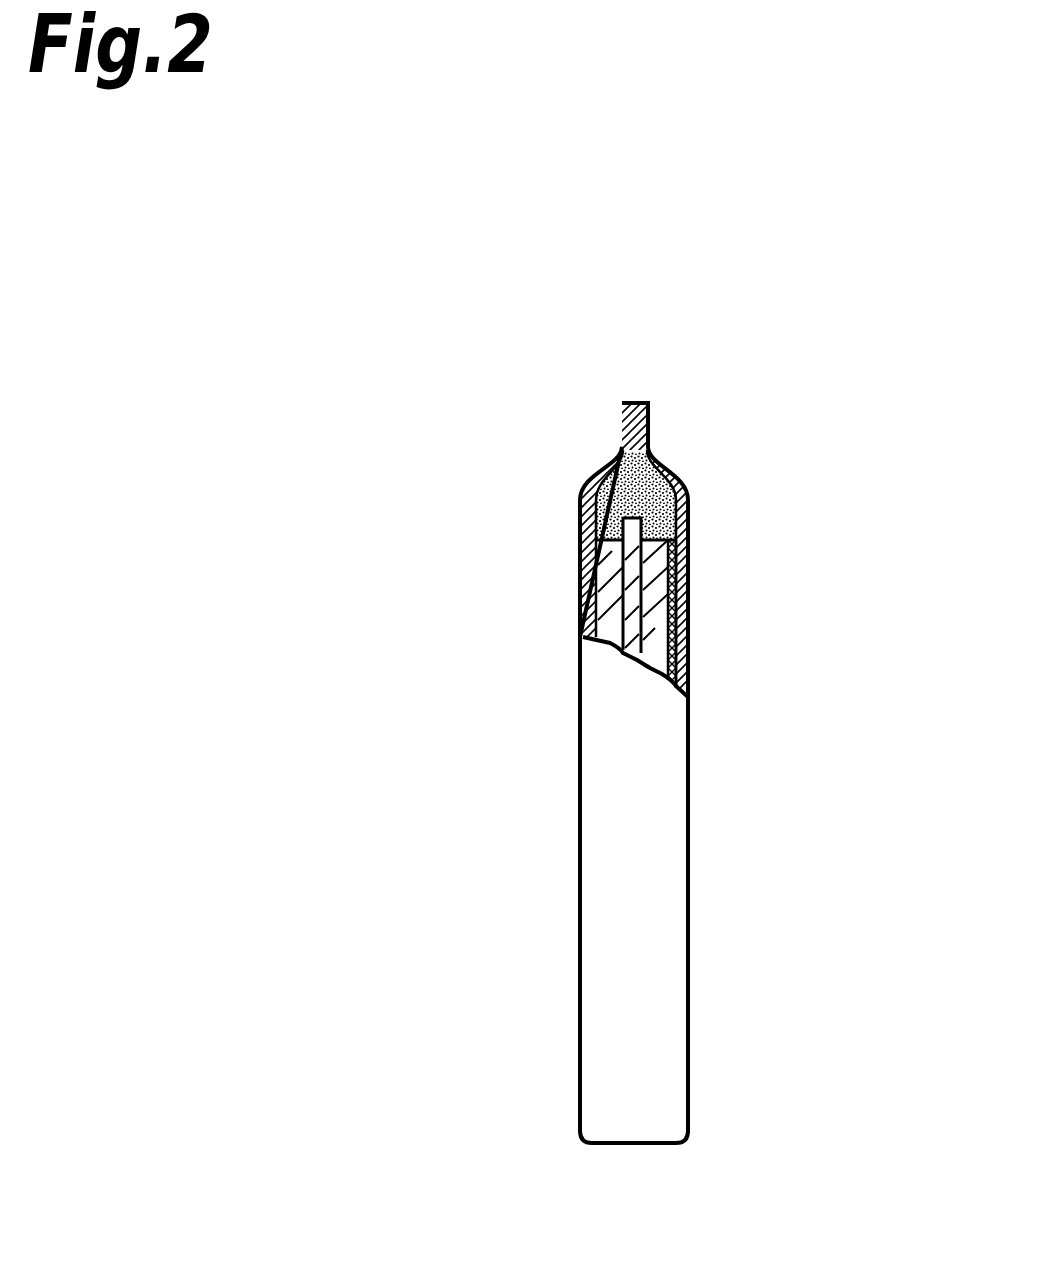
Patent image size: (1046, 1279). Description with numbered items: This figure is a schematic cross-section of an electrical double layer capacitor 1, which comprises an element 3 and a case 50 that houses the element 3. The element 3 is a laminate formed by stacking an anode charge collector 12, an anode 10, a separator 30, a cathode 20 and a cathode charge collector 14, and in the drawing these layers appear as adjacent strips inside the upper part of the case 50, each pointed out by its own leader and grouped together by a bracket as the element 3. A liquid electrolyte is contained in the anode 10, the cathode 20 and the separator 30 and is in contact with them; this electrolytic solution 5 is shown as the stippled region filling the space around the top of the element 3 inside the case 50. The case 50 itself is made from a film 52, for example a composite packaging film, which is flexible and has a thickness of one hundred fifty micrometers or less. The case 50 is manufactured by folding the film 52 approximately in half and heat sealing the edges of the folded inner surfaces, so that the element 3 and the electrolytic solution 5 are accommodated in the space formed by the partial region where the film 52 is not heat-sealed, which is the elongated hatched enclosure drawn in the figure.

The electrical double layer capacitor 1 is at (757, 372).
The film 52 is at (666, 470).
The electrolytic solution 5 is at (597, 497).
The element 3 is at (845, 533).
The anode charge collector 12 is at (688, 558).
The anode 10 is at (688, 597).
The cathode charge collector 14 is at (688, 622).
The cathode 20 is at (688, 642).
The separator 30 is at (688, 673).
The case 50 is at (580, 873).